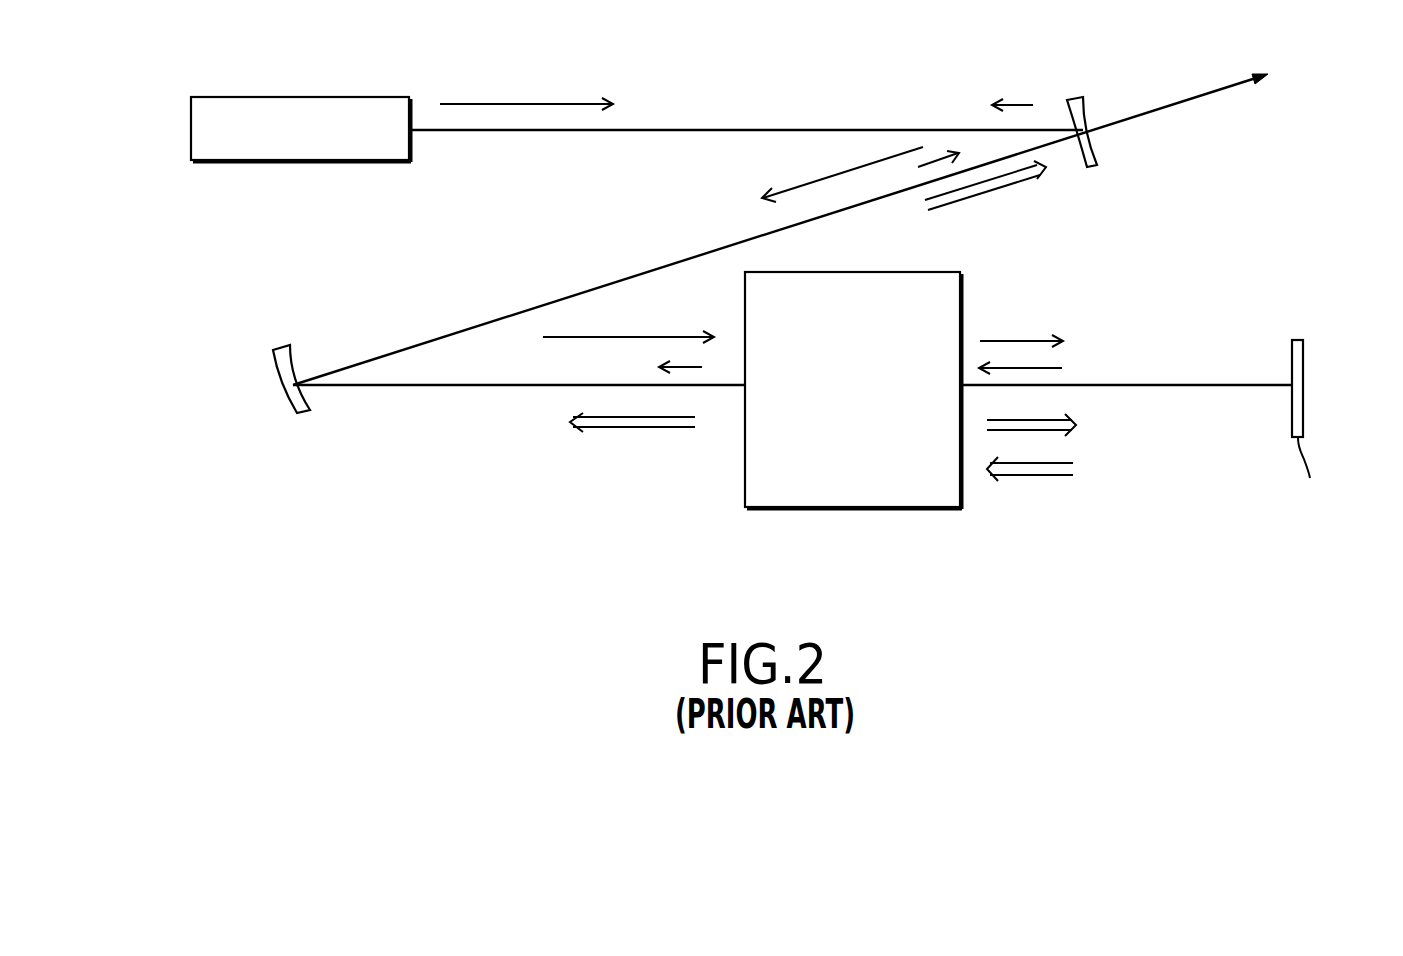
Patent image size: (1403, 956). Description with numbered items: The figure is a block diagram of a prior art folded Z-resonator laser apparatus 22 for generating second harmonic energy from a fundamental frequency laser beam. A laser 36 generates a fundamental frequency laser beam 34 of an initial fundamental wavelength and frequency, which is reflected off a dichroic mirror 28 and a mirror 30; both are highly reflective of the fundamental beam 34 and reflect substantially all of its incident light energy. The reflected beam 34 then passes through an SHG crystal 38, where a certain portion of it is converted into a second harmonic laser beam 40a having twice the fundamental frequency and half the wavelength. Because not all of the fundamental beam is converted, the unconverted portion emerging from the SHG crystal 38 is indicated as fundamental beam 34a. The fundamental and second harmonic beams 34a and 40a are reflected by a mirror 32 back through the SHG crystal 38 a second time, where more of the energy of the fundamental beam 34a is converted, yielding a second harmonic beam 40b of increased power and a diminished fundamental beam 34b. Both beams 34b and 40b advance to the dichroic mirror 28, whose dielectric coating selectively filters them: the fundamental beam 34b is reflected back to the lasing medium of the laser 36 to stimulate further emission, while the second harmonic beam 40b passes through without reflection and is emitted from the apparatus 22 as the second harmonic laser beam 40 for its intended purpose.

The folded Z-resonator laser apparatus 22 is at (572, 671).
The dichroic mirror 28 is at (1077, 97).
The mirror 30 is at (300, 413).
The mirror 32 is at (1305, 355).
The fundamental frequency laser beam 34 is at (505, 104).
The fundamental beam 34a is at (1064, 368).
The fundamental beam 34b is at (1015, 103).
The laser 36 is at (325, 97).
The SHG crystal 38 is at (962, 293).
The second harmonic laser beam 40 is at (1180, 100).
The second harmonic laser beam 40a is at (1057, 432).
The second harmonic beam 40b is at (980, 197).